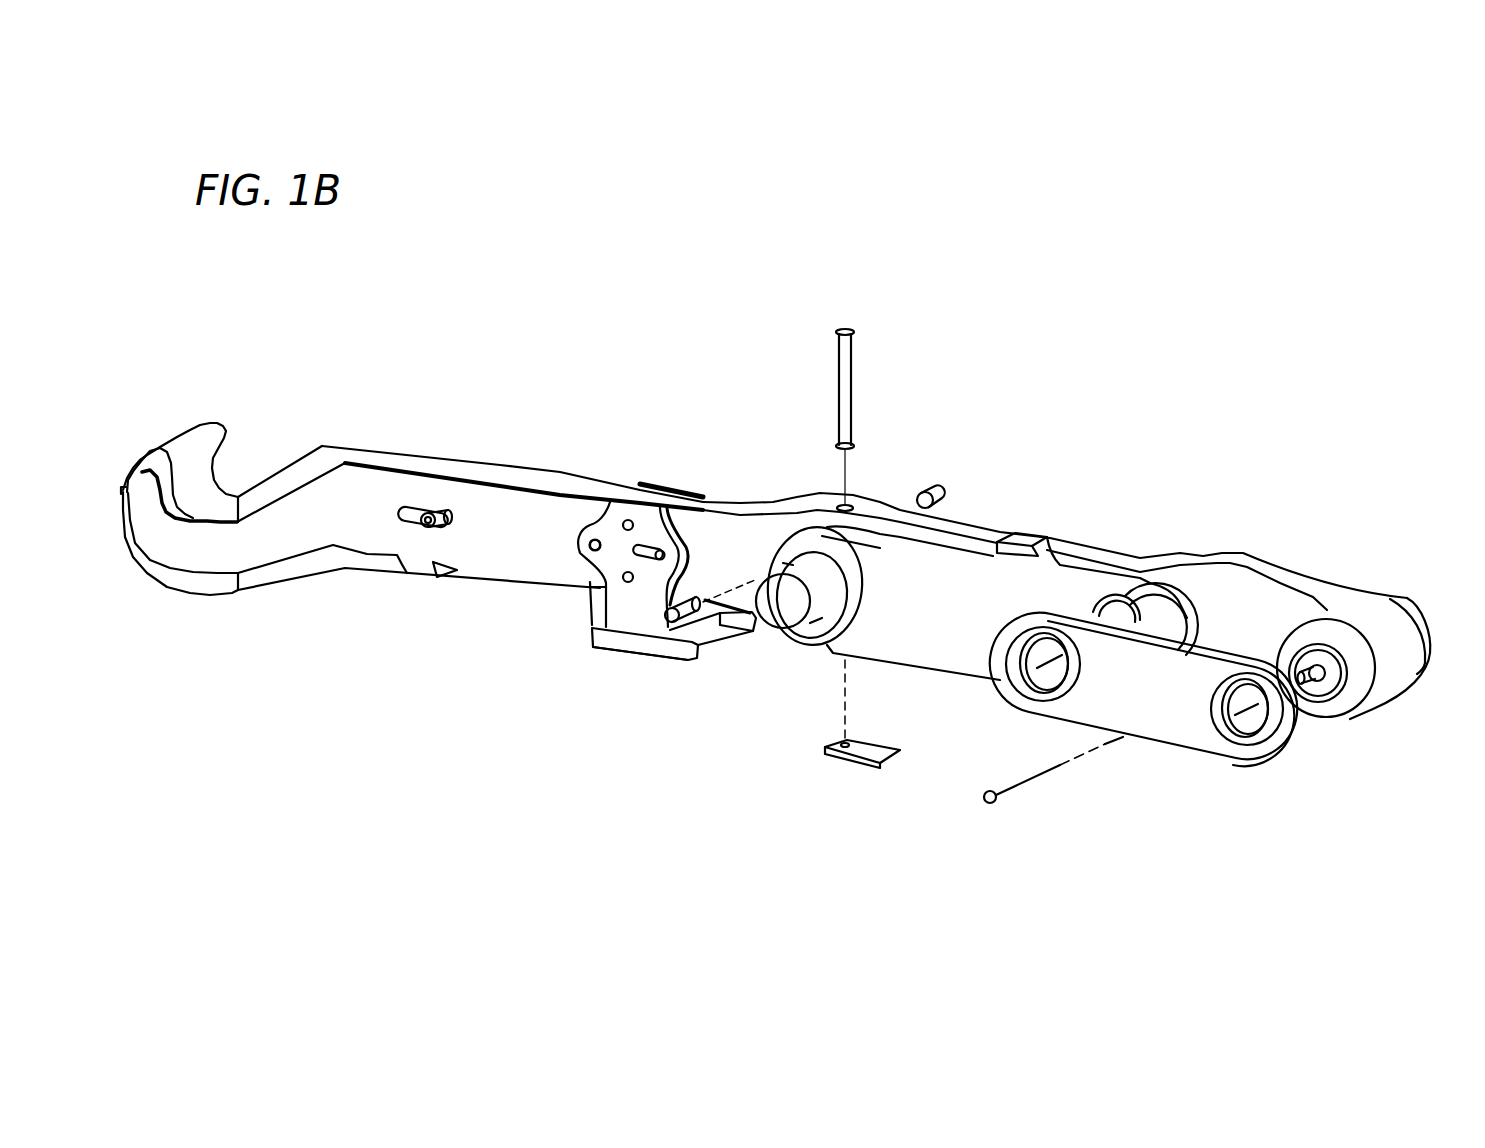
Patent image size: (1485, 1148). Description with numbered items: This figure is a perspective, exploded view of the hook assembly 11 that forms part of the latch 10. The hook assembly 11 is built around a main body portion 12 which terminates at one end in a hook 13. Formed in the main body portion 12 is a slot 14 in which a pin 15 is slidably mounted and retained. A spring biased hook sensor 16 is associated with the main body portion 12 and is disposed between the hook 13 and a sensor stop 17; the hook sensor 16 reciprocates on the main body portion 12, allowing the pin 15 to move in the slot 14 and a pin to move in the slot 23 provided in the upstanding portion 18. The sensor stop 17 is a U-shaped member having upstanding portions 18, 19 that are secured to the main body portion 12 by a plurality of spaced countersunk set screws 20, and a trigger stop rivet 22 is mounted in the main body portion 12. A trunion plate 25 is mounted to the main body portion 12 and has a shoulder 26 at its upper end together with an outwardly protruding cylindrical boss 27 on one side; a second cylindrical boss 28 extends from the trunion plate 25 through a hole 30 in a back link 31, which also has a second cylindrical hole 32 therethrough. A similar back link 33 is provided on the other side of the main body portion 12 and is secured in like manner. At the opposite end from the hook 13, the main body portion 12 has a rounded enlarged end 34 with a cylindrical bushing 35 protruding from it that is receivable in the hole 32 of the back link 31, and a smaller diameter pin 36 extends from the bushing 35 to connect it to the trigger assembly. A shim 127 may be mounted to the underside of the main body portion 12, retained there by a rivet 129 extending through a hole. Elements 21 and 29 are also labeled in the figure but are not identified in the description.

The latch 10 is at (1114, 291).
The hook assembly 11 is at (1123, 512).
The main body portion 12 is at (582, 487).
The hook 13 is at (203, 478).
The slot 14 is at (398, 508).
The pin 15 is at (427, 525).
The hook sensor 16 is at (522, 548).
The sensor stop 17 is at (657, 647).
The upstanding portion 18 is at (631, 608).
The upstanding portion 19 is at (682, 487).
The countersunk set screws 20 is at (590, 545).
The pin 21 is at (690, 600).
The trigger stop rivet 22 is at (937, 497).
The slot 23 is at (620, 547).
The trunion plate 25 is at (947, 630).
The shoulder 26 is at (1030, 533).
The cylindrical boss 27 is at (783, 610).
The second cylindrical boss 28 is at (1147, 617).
The bushing 29 is at (1100, 610).
The hole 30 is at (1042, 700).
The back link 31 is at (1163, 720).
The second cylindrical hole 32 is at (1243, 740).
The back link 33 is at (1410, 603).
The rounded enlarged end 34 is at (1403, 668).
The cylindrical bushing 35 is at (1352, 682).
The pin 36 is at (1310, 670).
The shim 127 is at (858, 758).
The rivet 129 is at (841, 378).